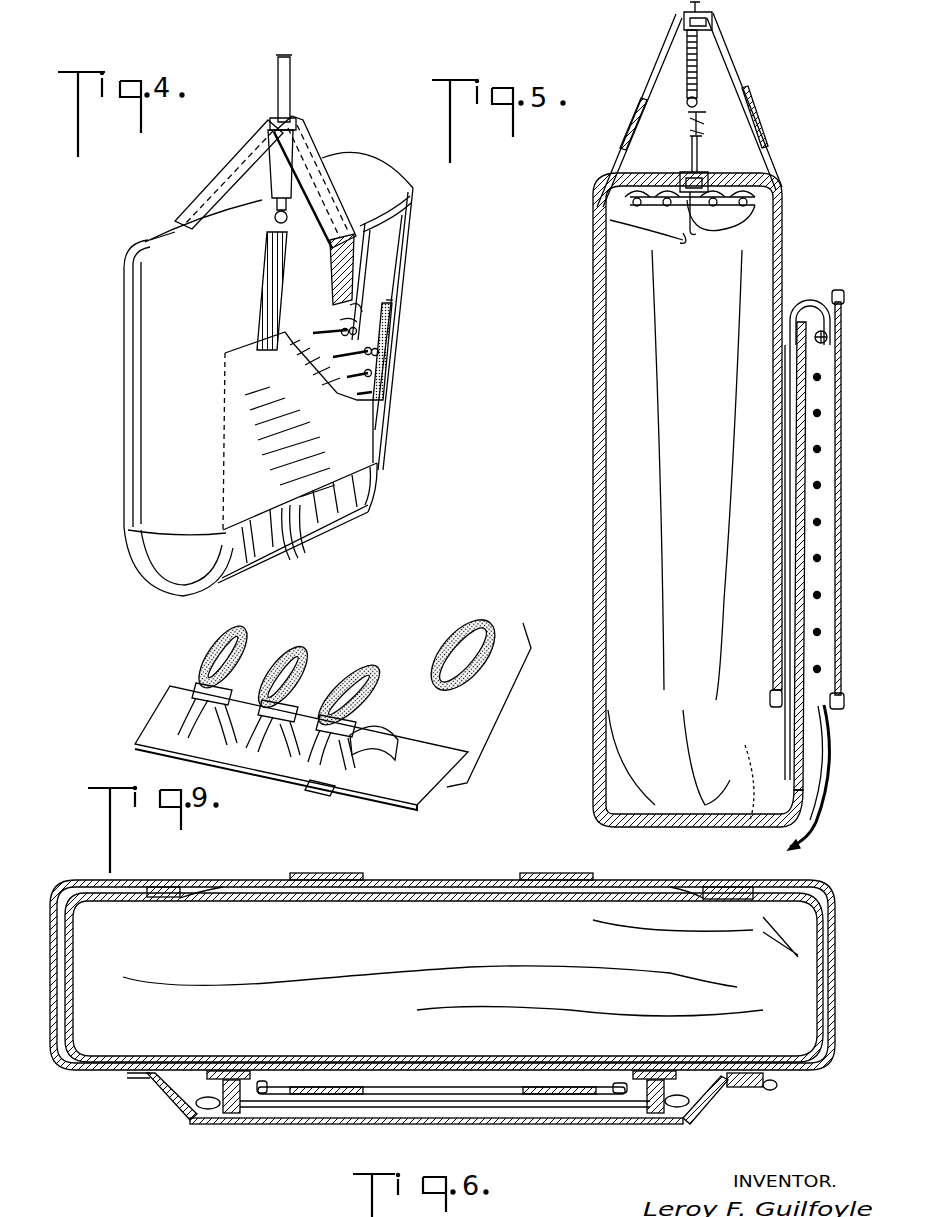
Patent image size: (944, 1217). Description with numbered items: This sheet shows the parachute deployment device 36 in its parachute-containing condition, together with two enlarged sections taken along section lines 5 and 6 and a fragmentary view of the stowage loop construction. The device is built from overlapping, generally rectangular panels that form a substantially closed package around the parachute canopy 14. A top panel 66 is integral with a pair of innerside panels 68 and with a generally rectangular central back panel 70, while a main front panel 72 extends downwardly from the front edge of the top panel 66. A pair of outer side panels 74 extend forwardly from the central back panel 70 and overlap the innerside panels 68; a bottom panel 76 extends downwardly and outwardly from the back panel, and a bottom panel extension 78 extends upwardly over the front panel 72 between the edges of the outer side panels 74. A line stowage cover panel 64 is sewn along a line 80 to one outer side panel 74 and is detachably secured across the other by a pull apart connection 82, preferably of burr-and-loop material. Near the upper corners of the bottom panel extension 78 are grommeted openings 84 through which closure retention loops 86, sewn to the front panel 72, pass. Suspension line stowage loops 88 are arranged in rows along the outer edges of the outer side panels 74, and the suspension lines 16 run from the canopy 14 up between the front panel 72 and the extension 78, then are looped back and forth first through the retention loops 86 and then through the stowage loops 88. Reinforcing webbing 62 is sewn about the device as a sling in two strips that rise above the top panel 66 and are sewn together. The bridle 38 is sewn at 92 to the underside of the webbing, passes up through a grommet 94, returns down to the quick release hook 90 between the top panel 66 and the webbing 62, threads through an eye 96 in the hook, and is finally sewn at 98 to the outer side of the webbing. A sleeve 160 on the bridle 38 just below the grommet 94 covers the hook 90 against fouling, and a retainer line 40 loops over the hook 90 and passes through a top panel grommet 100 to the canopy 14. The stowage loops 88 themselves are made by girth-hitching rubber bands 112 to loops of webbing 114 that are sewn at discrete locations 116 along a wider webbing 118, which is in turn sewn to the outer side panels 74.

In FIG. 4, the section line 5— 5 is at (323, 107).
In FIG. 4, the section line 6— 6 is at (407, 359).
In FIG. 4, the parachute canopy 14 is at (167, 567).
In FIG. 5, the parachute canopy 14 is at (620, 238).
In FIG. 4, the suspension lines 16 is at (307, 353).
In FIG. 5, the suspension lines 16 is at (810, 297).
In FIG. 6, the suspension lines 16 is at (427, 1107).
In FIG. 4, the parachute deployment device 36 is at (98, 237).
In FIG. 5, the parachute deployment device 36 is at (576, 332).
In FIG. 6, the parachute deployment device 36 is at (86, 865).
In FIG. 4, the bridle 38 is at (277, 78).
In FIG. 5, the bridle 38 is at (688, 55).
In FIG. 5, the retainer line 40 is at (692, 157).
In FIG. 4, the reinforcing webbing 62 is at (232, 160).
In FIG. 5, the reinforcing webbing 62 is at (777, 163).
In FIG. 6, the reinforcing webbing 62 is at (293, 873).
In FIG. 4, the line stowage cover panel 64 is at (243, 363).
In FIG. 6, the line stowage cover panel 64 is at (370, 1120).
In FIG. 4, the top panel 66 is at (164, 233).
In FIG. 5, the top panel 66 is at (647, 177).
In FIG. 4, the innerside panels 68 is at (130, 283).
In FIG. 6, the innerside panels 68 is at (70, 958).
In FIG. 5, the central back panel 70 is at (607, 490).
In FIG. 6, the central back panel 70 is at (410, 883).
In FIG. 4, the main front panel 72 is at (303, 268).
In FIG. 5, the main front panel 72 is at (767, 257).
In FIG. 6, the main front panel 72 is at (387, 1060).
In FIG. 4, the outer side panels 74 is at (398, 230).
In FIG. 6, the outer side panels 74 is at (50, 963).
In FIG. 4, the bottom panel 76 is at (230, 577).
In FIG. 5, the bottom panel 76 is at (737, 813).
In FIG. 4, the bottom panel extension 78 is at (385, 302).
In FIG. 6, the bottom panel extension 78 is at (477, 1080).
In FIG. 4, the sewing line 80 is at (220, 433).
In FIG. 6, the sewing line 80 is at (147, 1072).
In FIG. 4, the pull apart connection 82 is at (393, 323).
In FIG. 6, the pull apart connection 82 is at (743, 1093).
In FIG. 4, the grommeted openings 84 is at (355, 310).
In FIG. 5, the grommeted openings 84 is at (792, 340).
In FIG. 4, the closure retention loops 86 is at (352, 320).
In FIG. 5, the closure retention loops 86 is at (827, 336).
In FIG. 4, the suspension line stowage loops 88 is at (393, 353).
In FIG. 9, the suspension line stowage loops 88 is at (367, 663).
In FIG. 6, the suspension line stowage loops 88 is at (230, 1113).
In FIG. 5, the quick release hook 90 is at (688, 124).
In FIG. 5, the sewn attachment of bridle 92 is at (760, 137).
In FIG. 4, the grommet 94 is at (274, 124).
In FIG. 5, the grommet 94 is at (712, 14).
In FIG. 5, the eye 96 is at (683, 99).
In FIG. 5, the sewn attachment of bridle 98 is at (627, 130).
In FIG. 5, the top panel grommet 100 is at (703, 173).
In FIG. 9, the rubber bands 112 is at (450, 633).
In FIG. 9, the loops of webbing 114 is at (173, 720).
In FIG. 9, the sewn locations 116 is at (249, 739).
In FIG. 9, the wider webbing 118 is at (450, 787).
In FIG. 4, the sleeve 160 is at (275, 170).